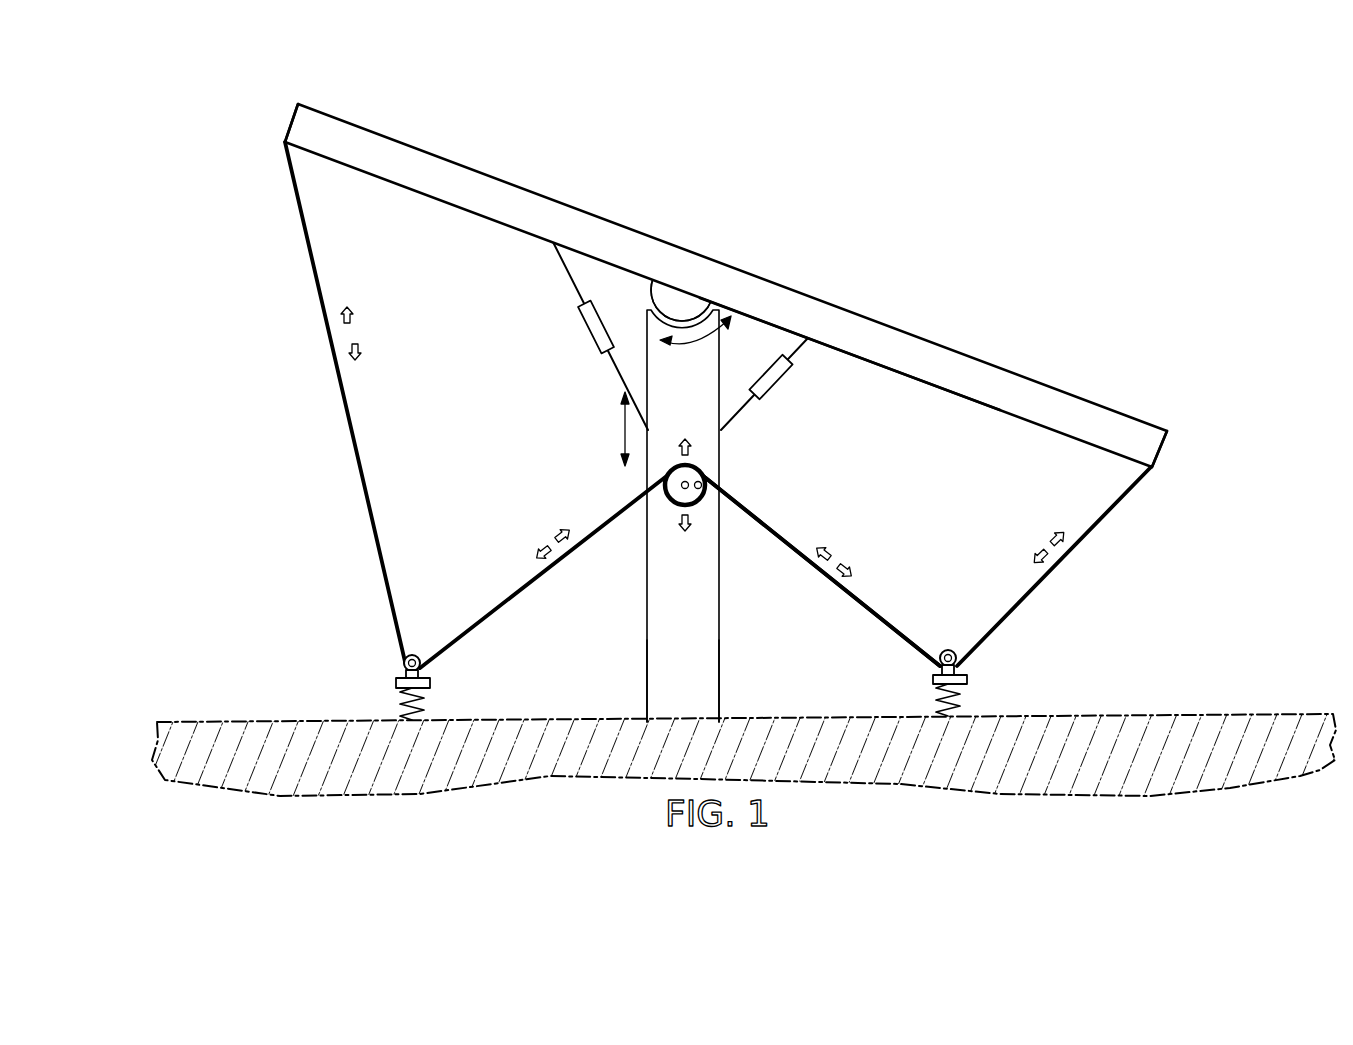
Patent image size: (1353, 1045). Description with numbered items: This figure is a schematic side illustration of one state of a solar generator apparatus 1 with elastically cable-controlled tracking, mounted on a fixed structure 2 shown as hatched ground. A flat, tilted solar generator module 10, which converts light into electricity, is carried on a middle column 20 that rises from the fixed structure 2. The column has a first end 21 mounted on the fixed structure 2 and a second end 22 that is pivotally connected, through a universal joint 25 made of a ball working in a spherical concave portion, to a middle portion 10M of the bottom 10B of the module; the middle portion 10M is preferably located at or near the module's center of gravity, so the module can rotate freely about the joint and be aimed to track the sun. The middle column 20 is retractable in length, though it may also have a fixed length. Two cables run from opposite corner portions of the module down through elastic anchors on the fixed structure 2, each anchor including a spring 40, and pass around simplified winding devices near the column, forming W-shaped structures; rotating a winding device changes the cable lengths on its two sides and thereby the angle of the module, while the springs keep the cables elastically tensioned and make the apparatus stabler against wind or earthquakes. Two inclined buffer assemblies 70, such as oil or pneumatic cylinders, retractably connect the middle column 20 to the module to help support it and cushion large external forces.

The solar generator apparatus 1 is at (1002, 262).
The fixed structure 2 is at (1148, 716).
The solar generator module 10 is at (722, 283).
The middle portion 10M is at (686, 284).
The bottom 10B is at (901, 375).
The middle column 20 is at (675, 516).
The first end 21 is at (661, 706).
The second end 22 is at (649, 325).
The universal joint 25 is at (665, 296).
The spring 40 is at (400, 698).
The buffer assembly 70 is at (586, 342).